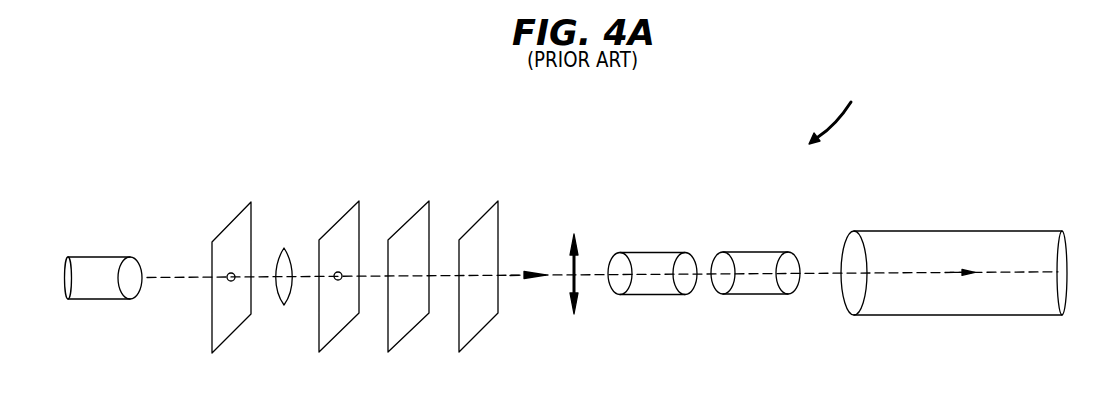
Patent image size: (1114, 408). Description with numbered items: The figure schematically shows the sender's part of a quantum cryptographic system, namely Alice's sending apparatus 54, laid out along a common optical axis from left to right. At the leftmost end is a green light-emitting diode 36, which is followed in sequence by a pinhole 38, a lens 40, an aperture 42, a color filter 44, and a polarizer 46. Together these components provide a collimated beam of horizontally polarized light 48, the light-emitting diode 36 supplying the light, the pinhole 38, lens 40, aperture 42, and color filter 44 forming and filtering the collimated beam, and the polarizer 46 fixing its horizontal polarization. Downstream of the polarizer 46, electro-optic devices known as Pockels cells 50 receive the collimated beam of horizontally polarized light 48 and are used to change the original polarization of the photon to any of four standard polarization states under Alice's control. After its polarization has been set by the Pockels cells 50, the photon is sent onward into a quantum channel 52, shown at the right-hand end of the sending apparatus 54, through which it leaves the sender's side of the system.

The green light-emitting diode 36 is at (93, 257).
The pinhole 38 is at (228, 224).
The lens 40 is at (282, 248).
The aperture 42 is at (341, 218).
The color filter 44 is at (410, 212).
The polarizer 46 is at (484, 211).
The collimated beam of horizontally polarized light 48 is at (502, 272).
The Pockels cells 50 is at (757, 252).
The quantum channel 52 is at (935, 230).
The Alice's sending apparatus 54 is at (839, 108).